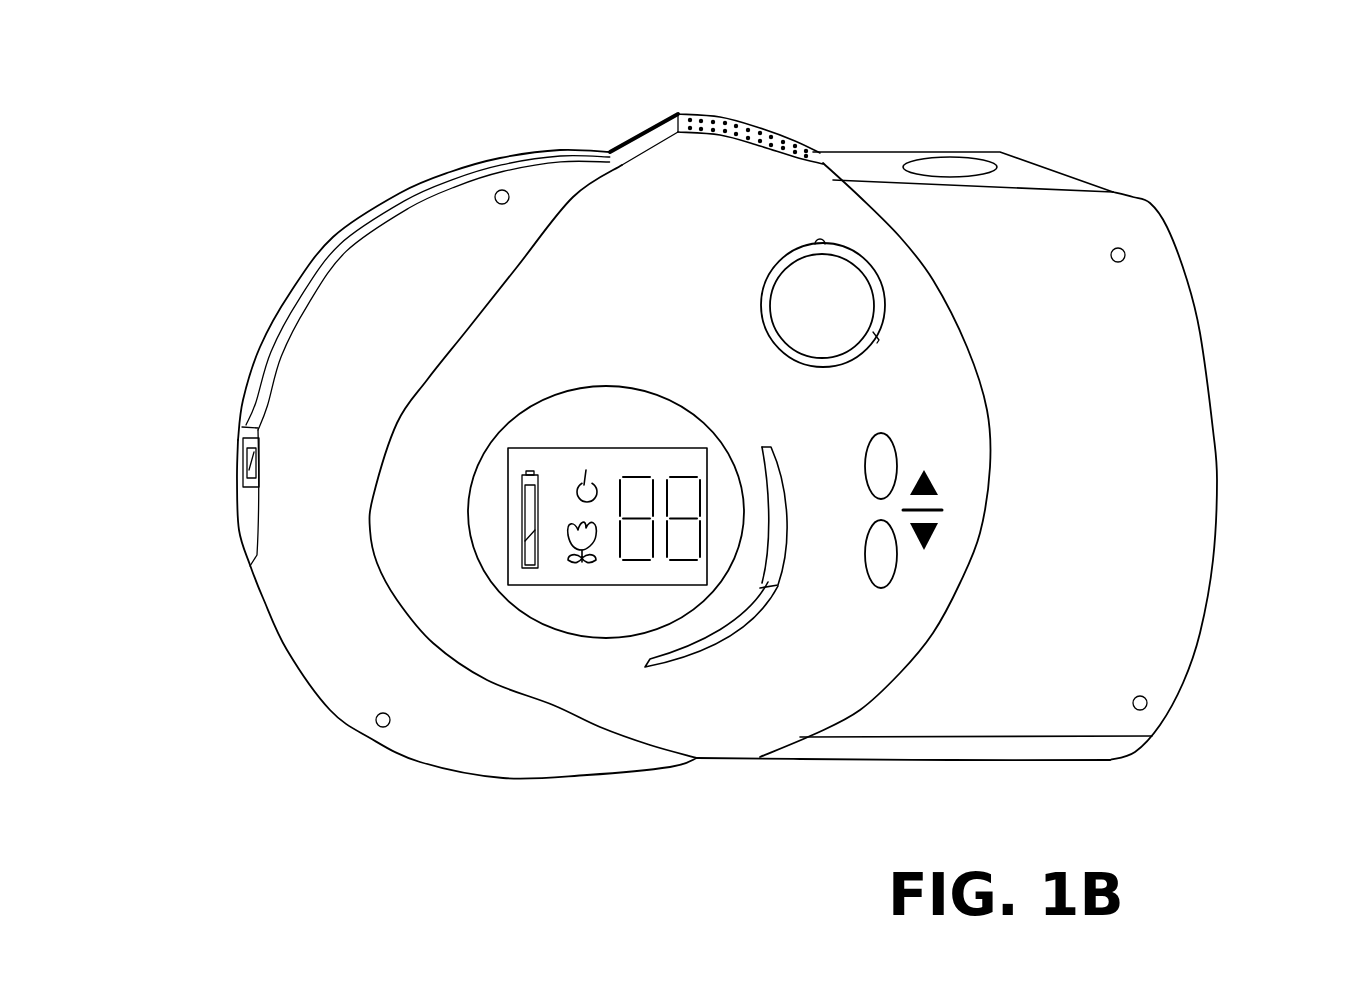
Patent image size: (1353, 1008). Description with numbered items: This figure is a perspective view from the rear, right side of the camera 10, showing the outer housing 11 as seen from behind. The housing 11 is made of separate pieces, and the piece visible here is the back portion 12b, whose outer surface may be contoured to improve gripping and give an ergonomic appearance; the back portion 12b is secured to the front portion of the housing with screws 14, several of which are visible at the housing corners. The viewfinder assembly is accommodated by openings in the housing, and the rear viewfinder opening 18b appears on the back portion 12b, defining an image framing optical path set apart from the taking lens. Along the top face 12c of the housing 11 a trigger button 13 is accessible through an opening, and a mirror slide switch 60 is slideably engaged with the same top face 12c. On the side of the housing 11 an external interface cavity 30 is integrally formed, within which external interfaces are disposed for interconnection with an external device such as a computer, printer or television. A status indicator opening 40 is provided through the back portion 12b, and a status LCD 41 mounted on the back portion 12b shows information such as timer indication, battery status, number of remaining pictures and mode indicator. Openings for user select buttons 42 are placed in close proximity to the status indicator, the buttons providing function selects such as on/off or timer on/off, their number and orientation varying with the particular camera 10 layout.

The camera 10 is at (290, 140).
The outer housing 11 is at (1217, 443).
The back portion 12b is at (420, 727).
The top face 12c is at (1043, 172).
The trigger button 13 is at (917, 156).
The screws 14 is at (502, 190).
The viewfinder assembly opening 18b is at (763, 331).
The external interface cavity 30 is at (240, 460).
The status indicator opening 40 is at (662, 398).
The status LCD 41 is at (607, 447).
The user select buttons 42 is at (866, 480).
The mirror slide switch 60 is at (650, 125).